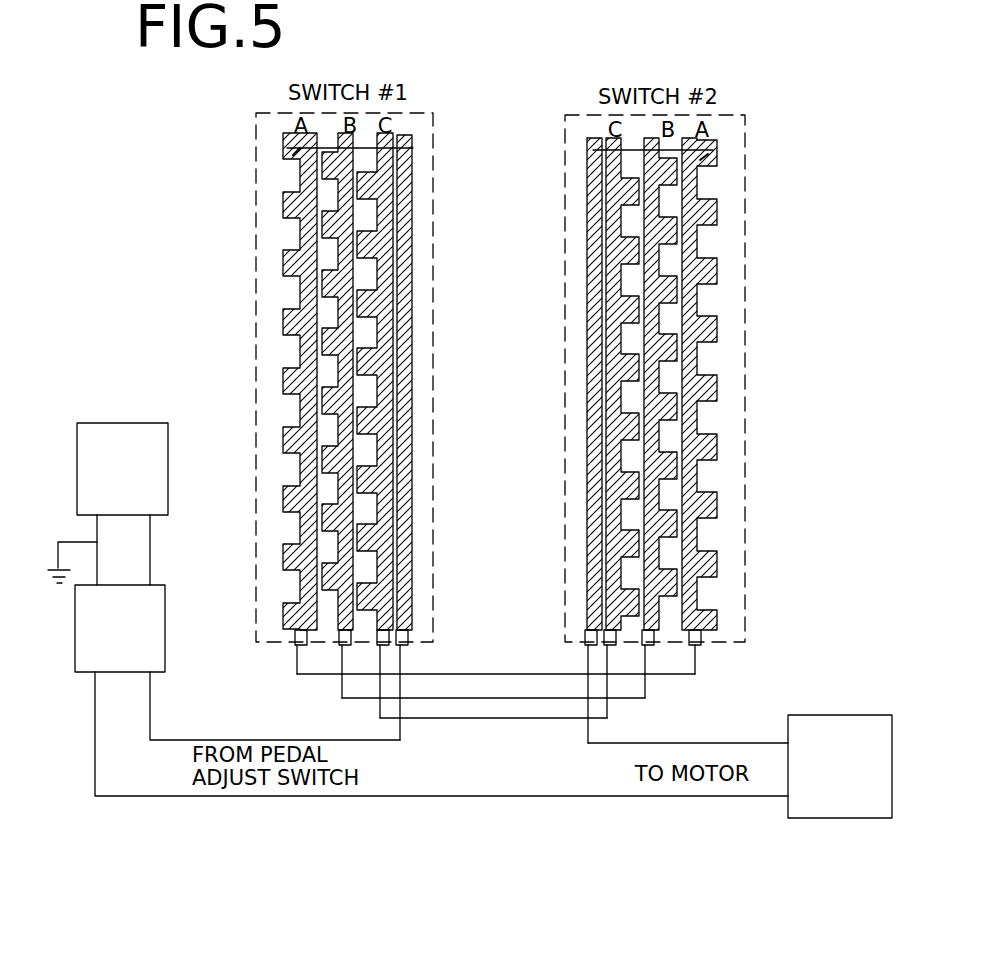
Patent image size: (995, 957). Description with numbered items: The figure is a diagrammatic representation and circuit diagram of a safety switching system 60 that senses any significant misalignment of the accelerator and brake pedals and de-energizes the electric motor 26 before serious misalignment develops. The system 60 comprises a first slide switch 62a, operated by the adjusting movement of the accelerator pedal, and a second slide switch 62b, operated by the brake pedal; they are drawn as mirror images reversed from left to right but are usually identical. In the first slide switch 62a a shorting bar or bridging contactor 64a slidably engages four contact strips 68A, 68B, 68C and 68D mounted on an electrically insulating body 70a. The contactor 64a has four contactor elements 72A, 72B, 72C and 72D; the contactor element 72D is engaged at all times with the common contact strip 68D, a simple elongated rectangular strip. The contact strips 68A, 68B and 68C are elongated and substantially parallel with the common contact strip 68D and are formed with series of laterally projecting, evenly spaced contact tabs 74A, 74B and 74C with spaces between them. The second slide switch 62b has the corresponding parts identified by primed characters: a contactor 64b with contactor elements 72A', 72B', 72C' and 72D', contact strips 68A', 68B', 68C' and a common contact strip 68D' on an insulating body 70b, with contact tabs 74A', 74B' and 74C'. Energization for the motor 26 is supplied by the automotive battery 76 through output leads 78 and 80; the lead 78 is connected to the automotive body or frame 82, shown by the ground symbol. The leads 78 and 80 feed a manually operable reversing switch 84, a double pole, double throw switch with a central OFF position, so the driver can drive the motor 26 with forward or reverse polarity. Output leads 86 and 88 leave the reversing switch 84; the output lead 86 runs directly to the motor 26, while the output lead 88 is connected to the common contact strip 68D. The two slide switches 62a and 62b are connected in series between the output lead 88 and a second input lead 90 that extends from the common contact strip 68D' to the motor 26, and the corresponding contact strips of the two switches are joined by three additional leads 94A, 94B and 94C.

The electric motor 26 is at (810, 818).
The safety switching system 60 is at (227, 142).
The first slide switch 62a is at (440, 343).
The second slide switch 62b is at (553, 395).
The shorting bar or bridging contactor 64a is at (297, 157).
The shorting bar or bridging contactor 64b is at (693, 157).
The contact strip 68A is at (256, 655).
The second contact strip 68B is at (308, 673).
The third contact strip 68C is at (357, 685).
The common contact strip 68D is at (440, 685).
The contact strip 68A' is at (742, 653).
The second contact strip 68B' is at (687, 675).
The third contact strip 68C' is at (637, 684).
The common contact strip 68D' is at (544, 654).
The electrically insulating body 70a is at (430, 527).
The electrically insulating body 70b is at (743, 590).
The contactor element 72A is at (223, 356).
The contactor element 72B is at (277, 344).
The contactor element 72C is at (418, 358).
The contactor element 72D is at (443, 382).
The contactor element 72A' is at (745, 383).
The contactor element 72B' is at (726, 360).
The contactor element 72C' is at (577, 350).
The contactor element 72D' is at (548, 378).
The contact tabs 74A is at (230, 362).
The contact tabs 74B is at (259, 433).
The contact tabs 74C is at (284, 512).
The contact tabs 74A' is at (768, 238).
The contact tabs 74B' is at (743, 313).
The contact tabs 74C' is at (725, 458).
The automotive battery 76 is at (168, 488).
The output lead 78 is at (97, 525).
The output lead 80 is at (152, 560).
The automotive body or frame 82 is at (48, 570).
The reversing switch 84 is at (165, 630).
The output lead 86 is at (183, 797).
The output lead 88 is at (150, 712).
The second input lead 90 is at (620, 742).
The lead 94A is at (520, 674).
The lead 94B is at (487, 698).
The lead 94C is at (533, 718).